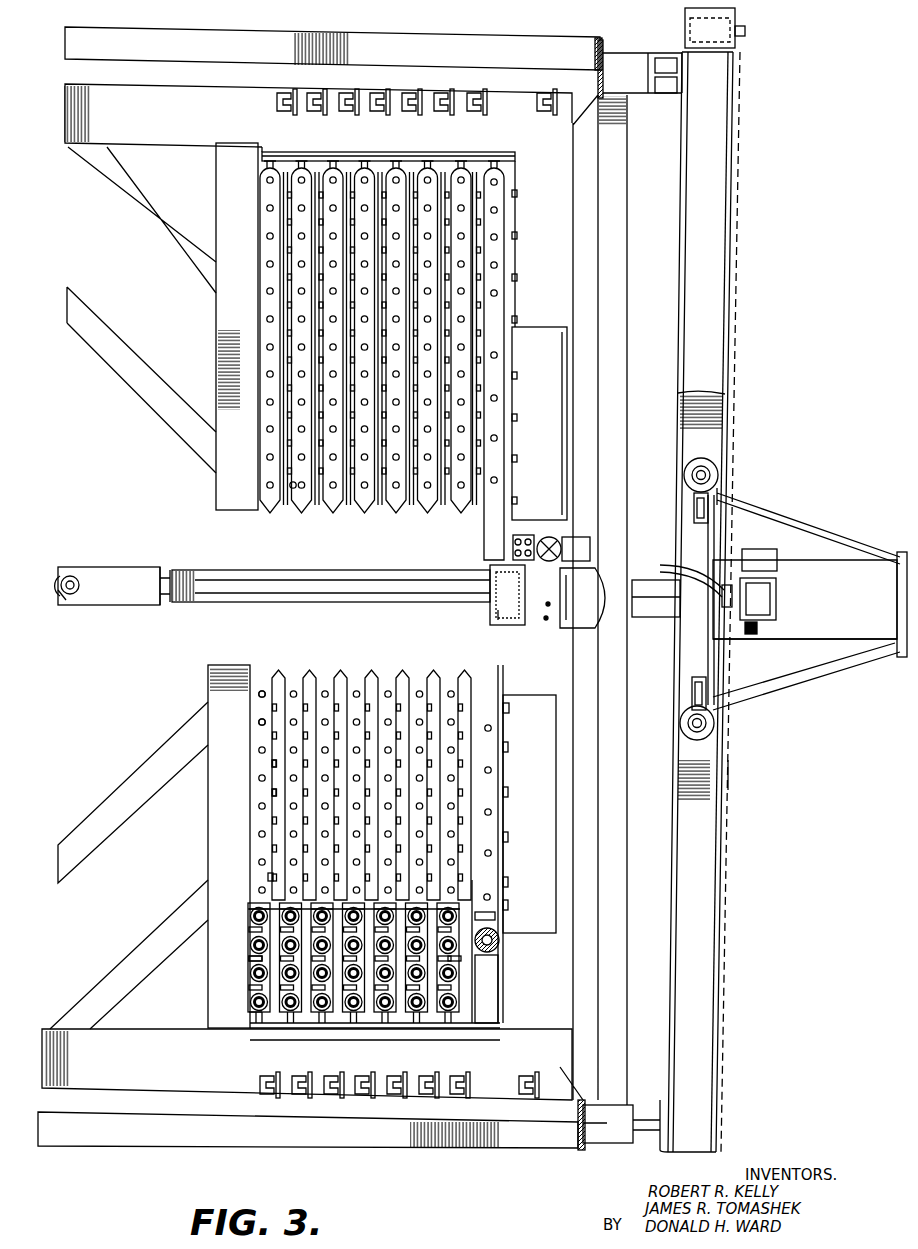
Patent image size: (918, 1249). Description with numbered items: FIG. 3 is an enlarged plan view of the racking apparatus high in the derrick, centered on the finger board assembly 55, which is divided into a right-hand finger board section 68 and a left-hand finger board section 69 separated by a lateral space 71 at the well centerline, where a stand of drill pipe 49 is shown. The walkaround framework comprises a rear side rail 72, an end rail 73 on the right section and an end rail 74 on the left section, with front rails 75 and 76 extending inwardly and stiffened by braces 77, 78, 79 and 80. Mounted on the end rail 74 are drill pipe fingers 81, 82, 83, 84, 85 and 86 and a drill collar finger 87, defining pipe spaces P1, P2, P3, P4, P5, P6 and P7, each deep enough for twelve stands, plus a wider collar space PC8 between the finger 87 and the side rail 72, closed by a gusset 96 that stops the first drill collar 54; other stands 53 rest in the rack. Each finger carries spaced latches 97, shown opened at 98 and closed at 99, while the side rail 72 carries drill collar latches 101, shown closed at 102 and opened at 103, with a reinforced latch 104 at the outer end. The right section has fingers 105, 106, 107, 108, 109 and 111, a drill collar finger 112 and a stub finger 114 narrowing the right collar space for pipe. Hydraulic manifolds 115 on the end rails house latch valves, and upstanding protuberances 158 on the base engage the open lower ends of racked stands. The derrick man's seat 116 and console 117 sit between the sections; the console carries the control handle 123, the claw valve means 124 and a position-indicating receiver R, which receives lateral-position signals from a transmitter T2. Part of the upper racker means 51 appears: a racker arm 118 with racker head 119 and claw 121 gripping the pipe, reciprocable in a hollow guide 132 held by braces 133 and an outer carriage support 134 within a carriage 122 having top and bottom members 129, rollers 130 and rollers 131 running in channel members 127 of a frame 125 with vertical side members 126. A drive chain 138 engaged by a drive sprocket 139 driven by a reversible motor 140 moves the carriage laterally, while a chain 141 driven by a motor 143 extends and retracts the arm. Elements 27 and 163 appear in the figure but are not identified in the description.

The end rail 73 is at (218, 102).
The front rail 75 is at (218, 332).
The brace 77 is at (174, 244).
The brace 78 is at (116, 343).
The front rail 76 is at (218, 832).
The brace 79 is at (166, 754).
The brace 80 is at (135, 963).
The finger board section 69 is at (228, 1062).
The end rail 74 is at (110, 1084).
The mounting bracket 27 is at (588, 1125).
The finger board assembly 55 is at (578, 264).
The side rail 72 is at (597, 572).
The frame 125 is at (708, 217).
The horizontal channel members 127 is at (715, 251).
The vertical side members 126 is at (748, 50).
The rollers 130 is at (688, 466).
The rollers 131 is at (697, 500).
The top and bottom members 129 is at (706, 548).
The carriage 122 is at (794, 510).
The braces 133 is at (797, 692).
The outer rectangular carriage support 134 is at (893, 672).
The hollow guide 132 is at (862, 666).
The upper racker assembly 51 is at (850, 575).
The reversible motor 143 is at (778, 562).
The reversible motor 140 is at (778, 609).
The second transmitter T2 is at (752, 637).
The drive sprocket 139 is at (677, 582).
The seat 116 is at (567, 580).
The racker arm 118 is at (216, 580).
The racker head 119 is at (128, 568).
The claw 121 is at (72, 574).
The stand of drill pipe 49 is at (71, 598).
The space 71 is at (196, 643).
The console 117 is at (510, 581).
The position-indicating receiver R is at (520, 533).
The control handle 123 is at (549, 536).
The valve means 124 is at (540, 640).
The terminal 163 is at (500, 616).
The drill collar latch 104 is at (507, 706).
The space PC8 is at (493, 690).
The drill collar latch open position 103 is at (509, 796).
The drill collar latch closed position 102 is at (501, 910).
The drill collar latches 101 is at (496, 917).
The drill collars 54 is at (500, 946).
The gusset 96 is at (494, 1005).
The stands of drill pipe 53 is at (250, 961).
The chain 141 is at (249, 925).
The latch closed position 99 is at (250, 993).
The latches 97 is at (268, 879).
The latch opened position 98 is at (272, 793).
The upstanding protuberances 158 is at (297, 490).
The drill pipe finger 81 is at (262, 1028).
The drill pipe finger 82 is at (292, 1028).
The drill pipe finger 83 is at (323, 1028).
The drill pipe finger 84 is at (355, 1028).
The drill pipe finger 85 is at (387, 1028).
The drill pipe finger 86 is at (418, 1028).
The drill collar finger 87 is at (450, 1028).
The space P1 is at (276, 670).
The space P2 is at (308, 670).
The space P3 is at (339, 670).
The space P4 is at (371, 670).
The space P5 is at (402, 670).
The space P6 is at (433, 670).
The space P7 is at (464, 670).
The finger board section 68 is at (494, 152).
The drill pipe finger 105 is at (272, 163).
The drill pipe finger 106 is at (302, 163).
The drill pipe finger 107 is at (335, 163).
The drill pipe finger 108 is at (367, 165).
The drill pipe finger 109 is at (399, 163).
The drill pipe finger 111 is at (431, 165).
The drill collar finger 112 is at (466, 163).
The stub finger 114 is at (506, 241).
The manifolds 115 is at (386, 92).
The drive chain 138 is at (730, 775).